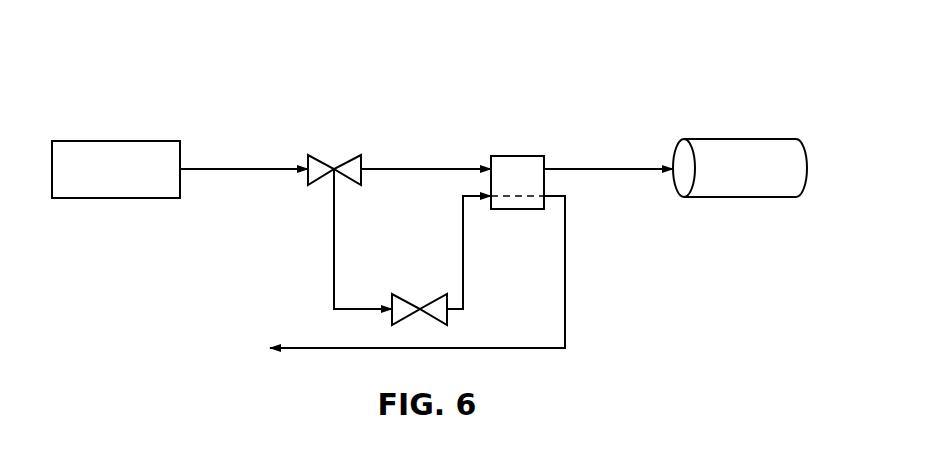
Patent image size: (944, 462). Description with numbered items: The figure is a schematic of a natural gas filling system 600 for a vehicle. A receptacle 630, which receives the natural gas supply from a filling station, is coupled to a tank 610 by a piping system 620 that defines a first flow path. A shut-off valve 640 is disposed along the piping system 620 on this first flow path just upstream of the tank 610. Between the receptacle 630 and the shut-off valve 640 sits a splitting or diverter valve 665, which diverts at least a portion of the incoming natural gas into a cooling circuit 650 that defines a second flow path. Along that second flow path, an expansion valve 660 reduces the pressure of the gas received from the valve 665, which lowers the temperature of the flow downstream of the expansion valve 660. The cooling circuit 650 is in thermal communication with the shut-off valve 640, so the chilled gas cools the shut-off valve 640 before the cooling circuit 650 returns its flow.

The natural gas filling system 600 is at (780, 86).
The tank 610 is at (765, 183).
The piping system 620 is at (425, 168).
The receptacle 630 is at (96, 183).
The shut-off valve 640 is at (518, 156).
The cooling circuit 650 is at (567, 250).
The expansion valve 660 is at (433, 298).
The valve 665 is at (350, 157).